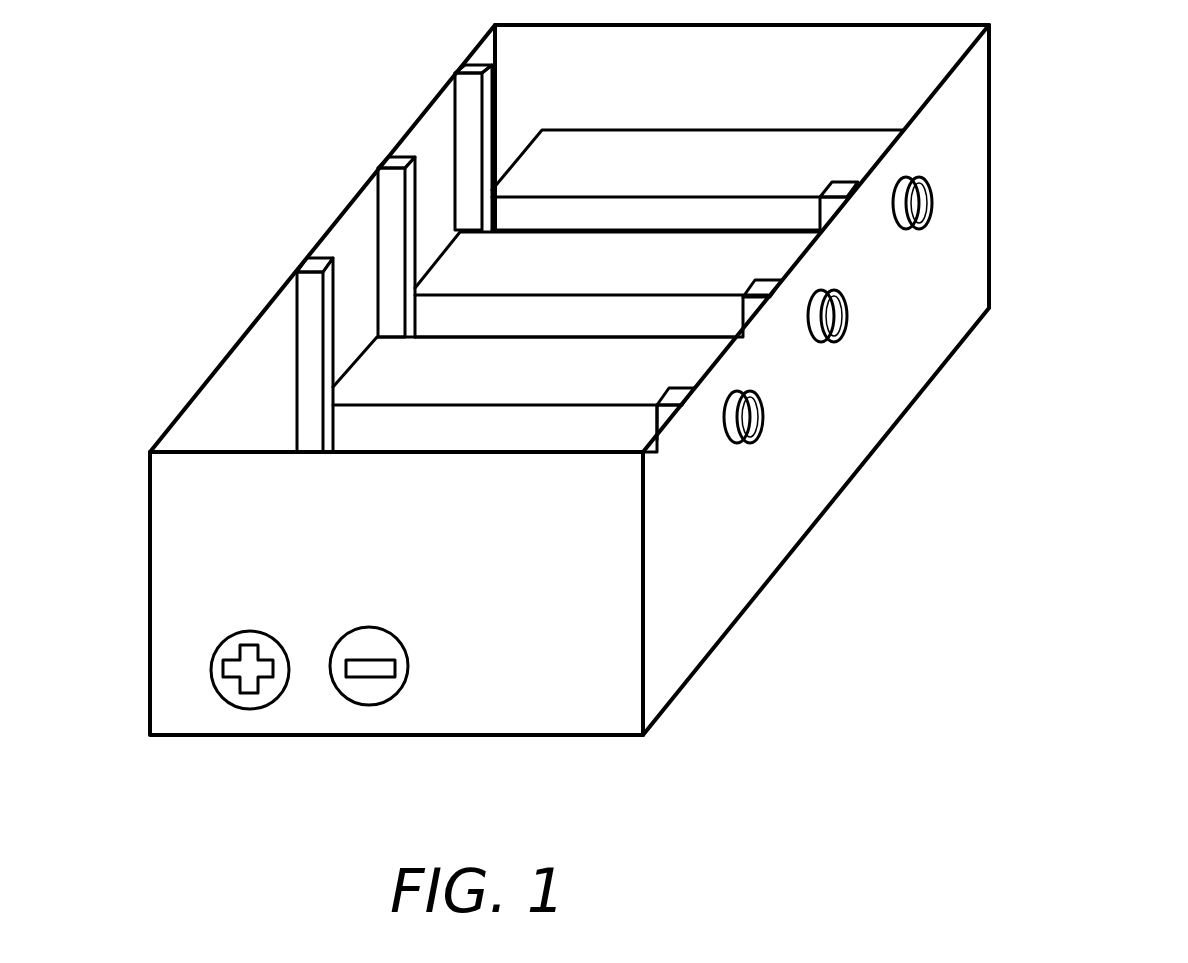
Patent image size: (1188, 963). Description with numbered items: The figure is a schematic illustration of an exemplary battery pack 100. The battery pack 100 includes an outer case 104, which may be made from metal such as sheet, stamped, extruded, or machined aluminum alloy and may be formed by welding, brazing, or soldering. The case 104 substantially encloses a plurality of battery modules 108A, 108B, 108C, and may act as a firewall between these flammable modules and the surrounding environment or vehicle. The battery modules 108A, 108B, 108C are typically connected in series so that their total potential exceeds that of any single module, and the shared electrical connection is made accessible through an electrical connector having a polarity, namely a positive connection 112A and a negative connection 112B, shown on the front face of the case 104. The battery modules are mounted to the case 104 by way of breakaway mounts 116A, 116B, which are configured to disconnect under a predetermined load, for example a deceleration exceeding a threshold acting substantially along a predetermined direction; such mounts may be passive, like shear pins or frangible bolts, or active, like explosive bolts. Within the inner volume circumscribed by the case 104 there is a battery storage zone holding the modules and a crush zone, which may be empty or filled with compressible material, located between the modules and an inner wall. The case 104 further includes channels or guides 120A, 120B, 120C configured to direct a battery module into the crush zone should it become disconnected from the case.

The battery pack 100 is at (266, 86).
The outer case 104 is at (458, 70).
The battery module 108A is at (353, 367).
The battery module 108B is at (435, 262).
The battery module 108C is at (512, 165).
The positive connection 112A is at (230, 711).
The negative connection 112B is at (363, 708).
The breakaway mount 116A is at (915, 231).
The breakaway mount 116B is at (828, 346).
The guide 120A is at (680, 386).
The guide 120B is at (764, 282).
The guide 120C is at (845, 181).